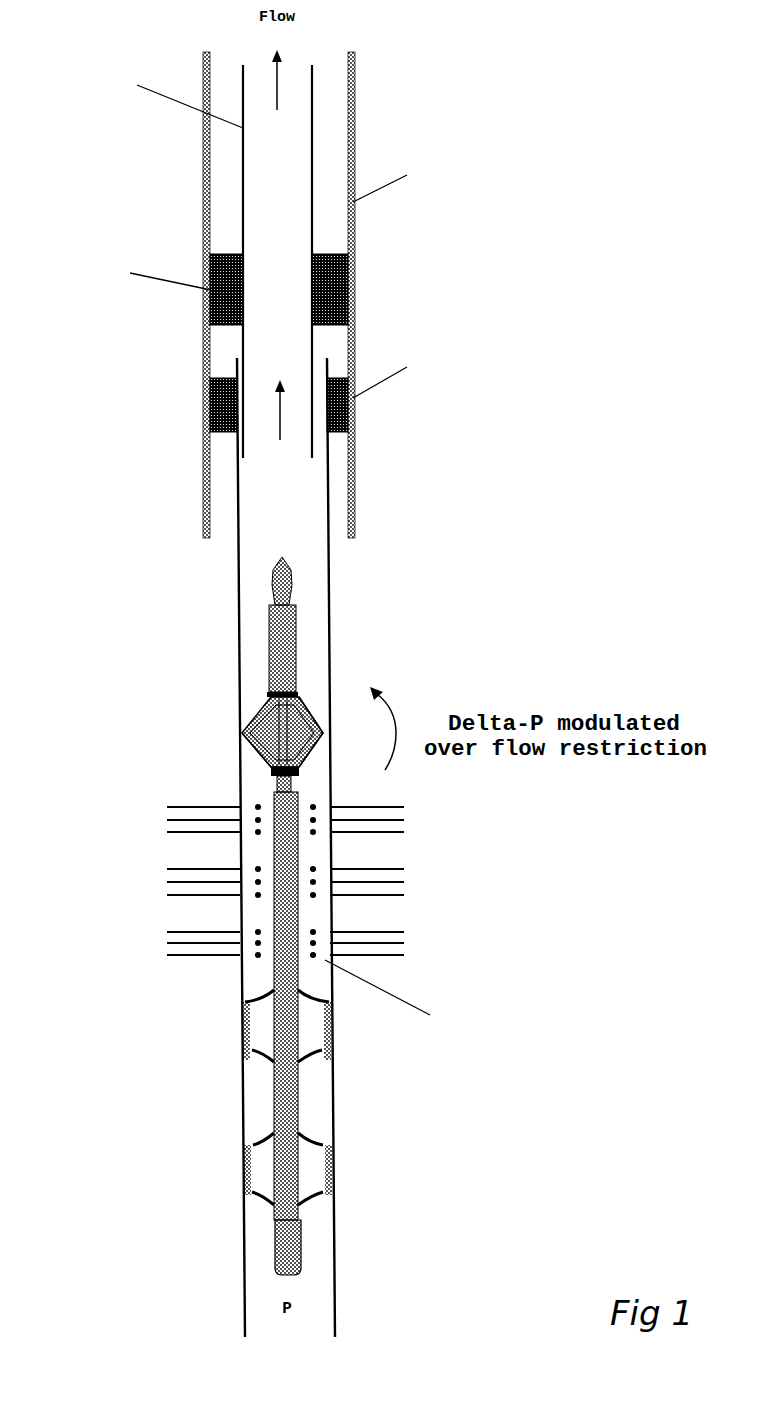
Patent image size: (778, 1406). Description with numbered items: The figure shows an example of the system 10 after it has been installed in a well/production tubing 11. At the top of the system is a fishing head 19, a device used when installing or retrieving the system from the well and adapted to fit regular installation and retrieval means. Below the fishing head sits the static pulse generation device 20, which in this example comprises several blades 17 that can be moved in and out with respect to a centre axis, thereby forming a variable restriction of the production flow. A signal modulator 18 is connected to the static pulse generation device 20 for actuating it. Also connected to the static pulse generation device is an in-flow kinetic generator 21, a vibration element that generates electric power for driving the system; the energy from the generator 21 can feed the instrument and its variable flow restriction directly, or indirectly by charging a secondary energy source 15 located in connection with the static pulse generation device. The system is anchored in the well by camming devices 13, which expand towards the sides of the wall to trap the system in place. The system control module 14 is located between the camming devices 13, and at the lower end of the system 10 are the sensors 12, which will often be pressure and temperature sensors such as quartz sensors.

The system 10 is at (322, 913).
The well/production tubing 11 is at (335, 1280).
The sensors 12 is at (275, 1240).
The camming devices 13 is at (242, 1042).
The system control module 14 is at (298, 1095).
The secondary energy source 15 is at (277, 838).
The blades 17 is at (251, 725).
The signal modulator 18 is at (295, 665).
The fishing head 19 is at (272, 577).
The static pulse generation device 20 is at (316, 707).
The in-flow kinetic generator 21 is at (257, 745).